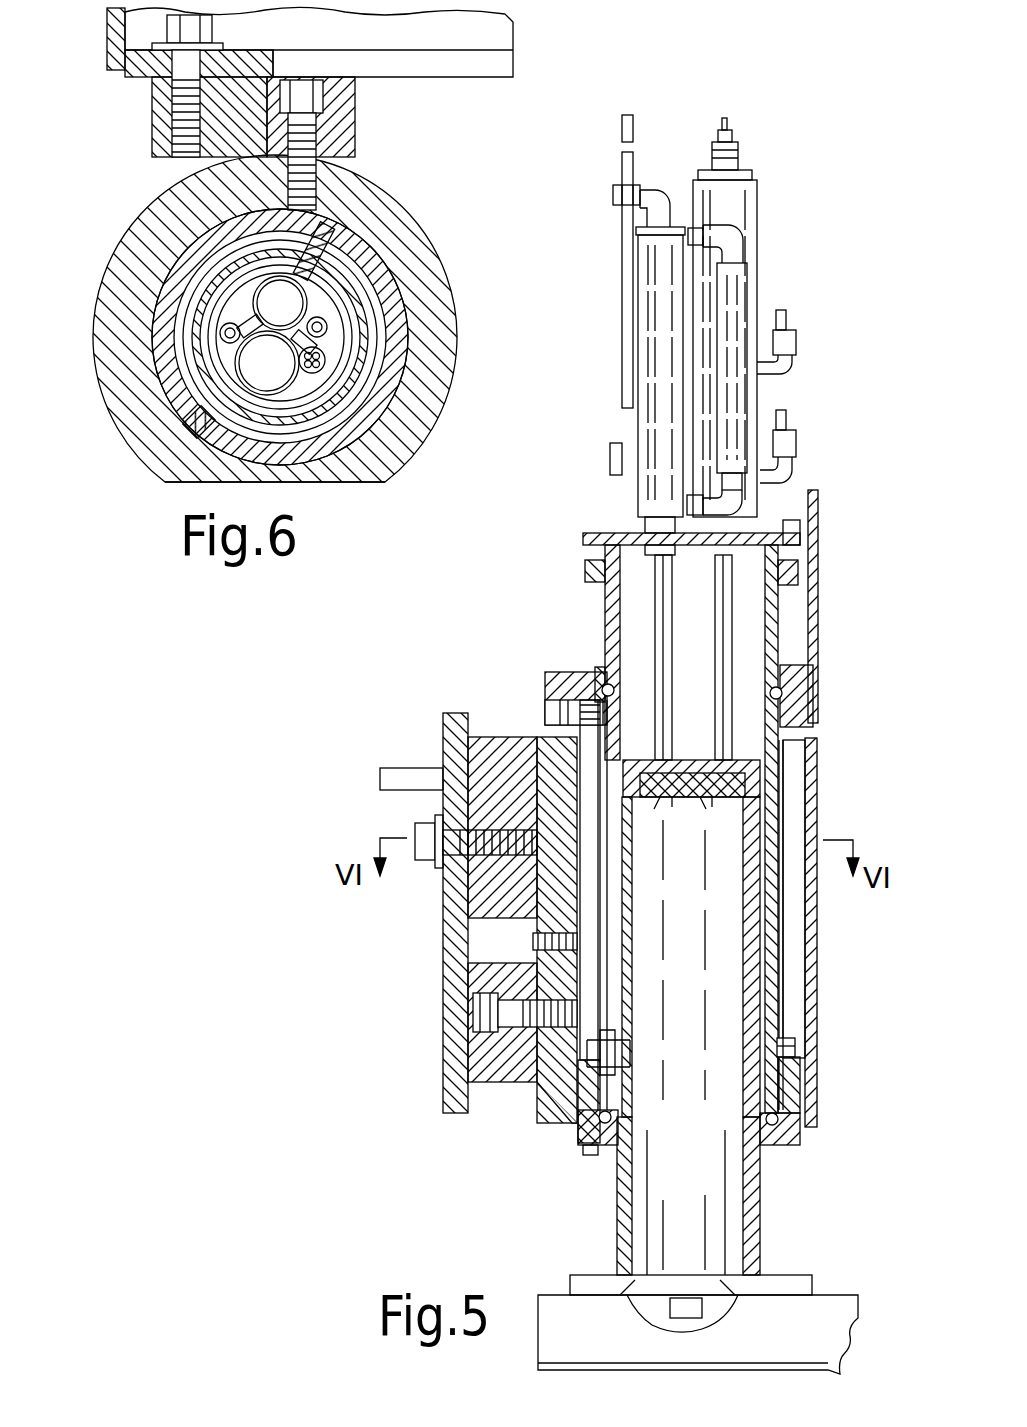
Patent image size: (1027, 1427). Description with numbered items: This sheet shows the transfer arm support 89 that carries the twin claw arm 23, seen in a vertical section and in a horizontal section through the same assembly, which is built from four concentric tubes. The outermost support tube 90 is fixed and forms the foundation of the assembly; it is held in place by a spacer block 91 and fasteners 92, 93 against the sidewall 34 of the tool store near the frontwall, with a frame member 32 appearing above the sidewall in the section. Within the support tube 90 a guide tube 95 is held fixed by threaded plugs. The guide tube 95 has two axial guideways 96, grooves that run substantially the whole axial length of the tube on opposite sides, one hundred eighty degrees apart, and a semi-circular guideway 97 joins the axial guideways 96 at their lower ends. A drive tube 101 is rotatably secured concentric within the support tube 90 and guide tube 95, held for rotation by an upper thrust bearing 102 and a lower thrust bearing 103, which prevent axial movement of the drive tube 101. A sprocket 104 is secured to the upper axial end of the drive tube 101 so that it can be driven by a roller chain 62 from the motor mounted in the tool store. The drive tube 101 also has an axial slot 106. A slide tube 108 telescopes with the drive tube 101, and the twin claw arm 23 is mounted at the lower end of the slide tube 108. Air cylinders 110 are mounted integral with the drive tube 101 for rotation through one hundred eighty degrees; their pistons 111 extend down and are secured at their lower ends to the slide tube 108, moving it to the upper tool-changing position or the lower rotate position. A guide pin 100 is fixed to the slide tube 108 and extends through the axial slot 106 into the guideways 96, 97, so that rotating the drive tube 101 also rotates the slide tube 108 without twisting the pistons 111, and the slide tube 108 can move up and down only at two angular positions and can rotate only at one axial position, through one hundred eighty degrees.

In FIG. 5, the twin claw arm 23 is at (852, 1282).
In FIG. 6, the frame member 32 is at (110, 40).
In FIG. 6, the sidewall 34 is at (443, 60).
In FIG. 5, the sidewall 34 is at (452, 900).
In FIG. 5, the roller chain 62 is at (800, 540).
In FIG. 5, the transfer arm support 89 is at (833, 784).
In FIG. 6, the support tube 90 is at (134, 234).
In FIG. 5, the support tube 90 is at (835, 902).
In FIG. 6, the spacer block 91 is at (152, 130).
In FIG. 5, the spacer block 91 is at (513, 1085).
In FIG. 5, the fastener 92 is at (483, 1012).
In FIG. 5, the fastener 93 is at (426, 823).
In FIG. 6, the guide tube 95 is at (164, 300).
In FIG. 5, the guide tube 95 is at (790, 1082).
In FIG. 6, the axial guideways 96 is at (200, 420).
In FIG. 5, the axial guideways 96 is at (590, 980).
In FIG. 5, the semi-circular guideway 97 is at (791, 1040).
In FIG. 6, the guide pin 100 is at (335, 212).
In FIG. 5, the guide pin 100 is at (582, 1060).
In FIG. 6, the drive tube 101 is at (383, 368).
In FIG. 5, the drive tube 101 is at (780, 632).
In FIG. 5, the upper thrust bearing 102 is at (808, 710).
In FIG. 5, the lower thrust bearing 103 is at (775, 1118).
In FIG. 5, the sprocket 104 is at (589, 533).
In FIG. 6, the axial slot 106 is at (308, 268).
In FIG. 5, the axial slot 106 is at (610, 893).
In FIG. 6, the slide tube 108 is at (385, 458).
In FIG. 5, the slide tube 108 is at (625, 1164).
In FIG. 6, the air cylinders 110 is at (288, 308).
In FIG. 5, the air cylinders 110 is at (645, 312).
In FIG. 5, the pistons 111 is at (712, 608).